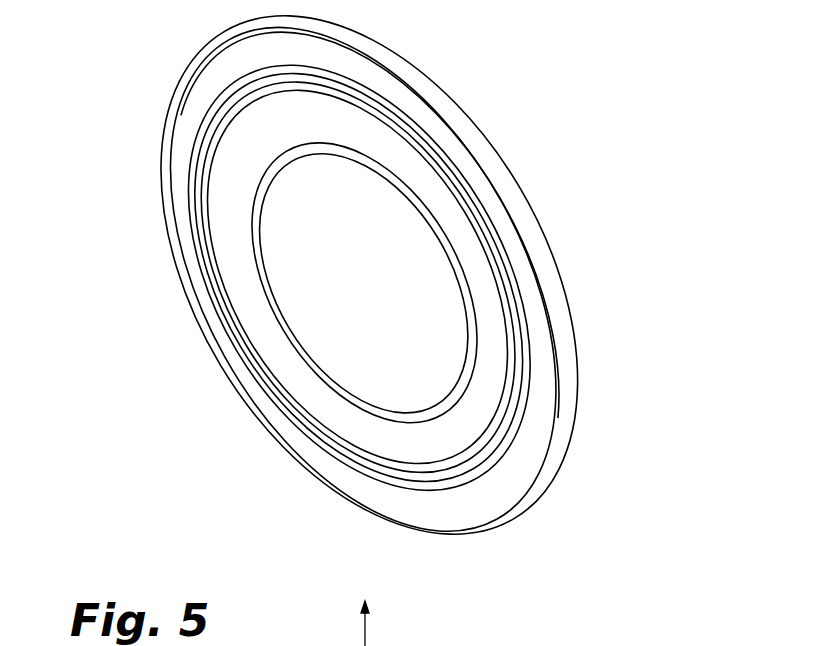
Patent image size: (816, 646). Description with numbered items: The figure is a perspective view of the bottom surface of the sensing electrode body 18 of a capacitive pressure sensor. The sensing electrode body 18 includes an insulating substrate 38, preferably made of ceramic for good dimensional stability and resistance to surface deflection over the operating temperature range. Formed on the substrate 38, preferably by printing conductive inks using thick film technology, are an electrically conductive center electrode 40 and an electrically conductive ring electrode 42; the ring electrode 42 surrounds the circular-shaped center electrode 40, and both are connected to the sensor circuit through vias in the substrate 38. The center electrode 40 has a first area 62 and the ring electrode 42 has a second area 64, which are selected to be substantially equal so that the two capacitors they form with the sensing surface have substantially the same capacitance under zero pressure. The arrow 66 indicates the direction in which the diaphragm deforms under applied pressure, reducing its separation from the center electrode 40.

The sensing electrode body 18 is at (369, 304).
The insulating substrate 38 is at (568, 421).
The center electrode 40 is at (286, 273).
The ring electrode 42 is at (224, 164).
The first area 62 is at (404, 322).
The second area 64 is at (313, 130).
The arrow 66 is at (365, 641).